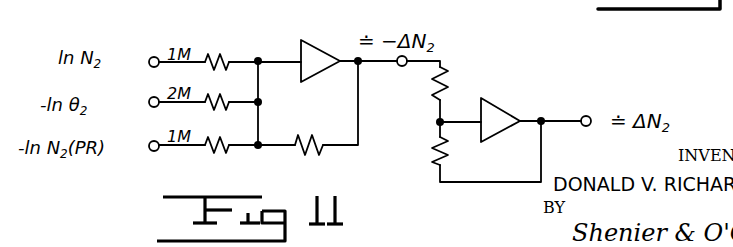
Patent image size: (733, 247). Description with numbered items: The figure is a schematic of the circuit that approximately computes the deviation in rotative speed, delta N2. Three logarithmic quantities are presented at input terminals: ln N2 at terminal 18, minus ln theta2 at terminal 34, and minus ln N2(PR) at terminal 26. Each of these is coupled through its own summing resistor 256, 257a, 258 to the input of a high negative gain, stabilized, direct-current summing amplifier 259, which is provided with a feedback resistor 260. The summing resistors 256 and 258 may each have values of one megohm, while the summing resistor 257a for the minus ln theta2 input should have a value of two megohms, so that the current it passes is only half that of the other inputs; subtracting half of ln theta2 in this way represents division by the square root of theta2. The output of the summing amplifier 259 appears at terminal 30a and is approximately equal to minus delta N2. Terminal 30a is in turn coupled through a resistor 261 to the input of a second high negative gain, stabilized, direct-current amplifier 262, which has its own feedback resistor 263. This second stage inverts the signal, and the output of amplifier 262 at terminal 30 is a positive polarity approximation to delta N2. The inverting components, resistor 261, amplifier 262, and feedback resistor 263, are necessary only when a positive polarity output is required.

The terminal 18 is at (153, 57).
The terminal 34 is at (152, 97).
The terminal 26 is at (156, 151).
The summing resistor 256 is at (222, 57).
The summing resistor 257a is at (222, 94).
The summing resistor 258 is at (208, 153).
The summing amplifier 259 is at (331, 19).
The feedback resistor 260 is at (301, 153).
The terminal 30a is at (400, 66).
The resistor 261 is at (451, 88).
The amplifier 262 is at (497, 103).
The feedback resistor 263 is at (449, 149).
The terminal 30 is at (585, 127).